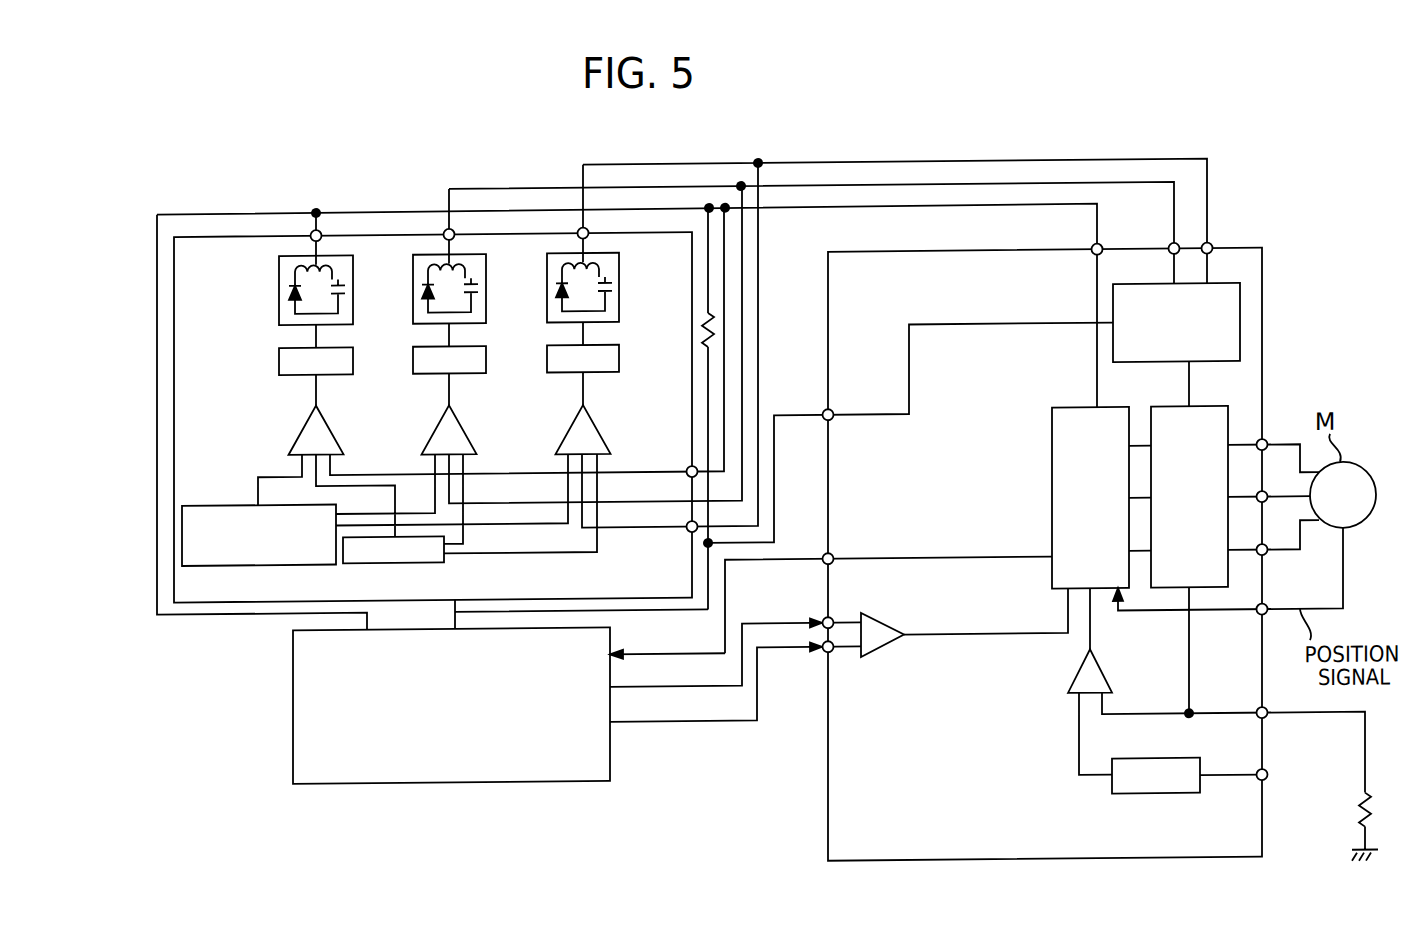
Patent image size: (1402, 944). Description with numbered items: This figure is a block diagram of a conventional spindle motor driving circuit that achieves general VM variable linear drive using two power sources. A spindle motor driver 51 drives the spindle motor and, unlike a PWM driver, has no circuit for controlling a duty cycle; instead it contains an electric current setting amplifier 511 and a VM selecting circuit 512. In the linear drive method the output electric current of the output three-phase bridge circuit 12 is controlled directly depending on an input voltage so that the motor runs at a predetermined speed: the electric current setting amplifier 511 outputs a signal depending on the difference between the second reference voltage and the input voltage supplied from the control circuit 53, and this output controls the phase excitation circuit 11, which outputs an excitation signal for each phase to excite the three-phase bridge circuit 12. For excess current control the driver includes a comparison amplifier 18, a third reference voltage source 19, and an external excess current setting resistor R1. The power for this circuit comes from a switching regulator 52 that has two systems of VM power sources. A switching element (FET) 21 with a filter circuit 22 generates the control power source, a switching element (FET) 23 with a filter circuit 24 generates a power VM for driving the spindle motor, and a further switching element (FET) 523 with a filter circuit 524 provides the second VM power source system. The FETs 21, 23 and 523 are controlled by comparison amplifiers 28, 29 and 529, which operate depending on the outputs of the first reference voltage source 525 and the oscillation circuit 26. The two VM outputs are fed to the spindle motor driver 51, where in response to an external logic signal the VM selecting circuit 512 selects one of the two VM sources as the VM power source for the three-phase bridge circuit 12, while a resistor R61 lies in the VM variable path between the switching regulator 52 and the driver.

The phase excitation circuit 11 is at (1052, 440).
The three-phase bridge circuit 12 is at (1200, 411).
The comparison amplifier 18 is at (1100, 672).
The reference voltage source VREF3 19 is at (1110, 797).
The switching element (FET) 21 is at (298, 371).
The filter circuit 22 is at (353, 287).
The switching element (FET) 23 is at (432, 371).
The filter circuit 24 is at (486, 288).
The oscillation circuit 26 is at (205, 501).
The comparison amplifier 28 is at (336, 433).
The comparison amplifier 29 is at (468, 431).
The spindle motor driver 51 is at (1236, 253).
The switching regulator 52 is at (158, 413).
The control circuit 53 is at (483, 780).
The electric current setting amplifier 511 is at (873, 659).
The VM selecting circuit 512 is at (1240, 310).
The switching element (FET) 523 is at (568, 372).
The filter circuit 524 is at (618, 288).
The reference voltage source VREF1 525 is at (372, 561).
The comparison amplifier 529 is at (602, 431).
The resistor R61 is at (714, 335).
The external excess current setting resistor R1 is at (1360, 812).